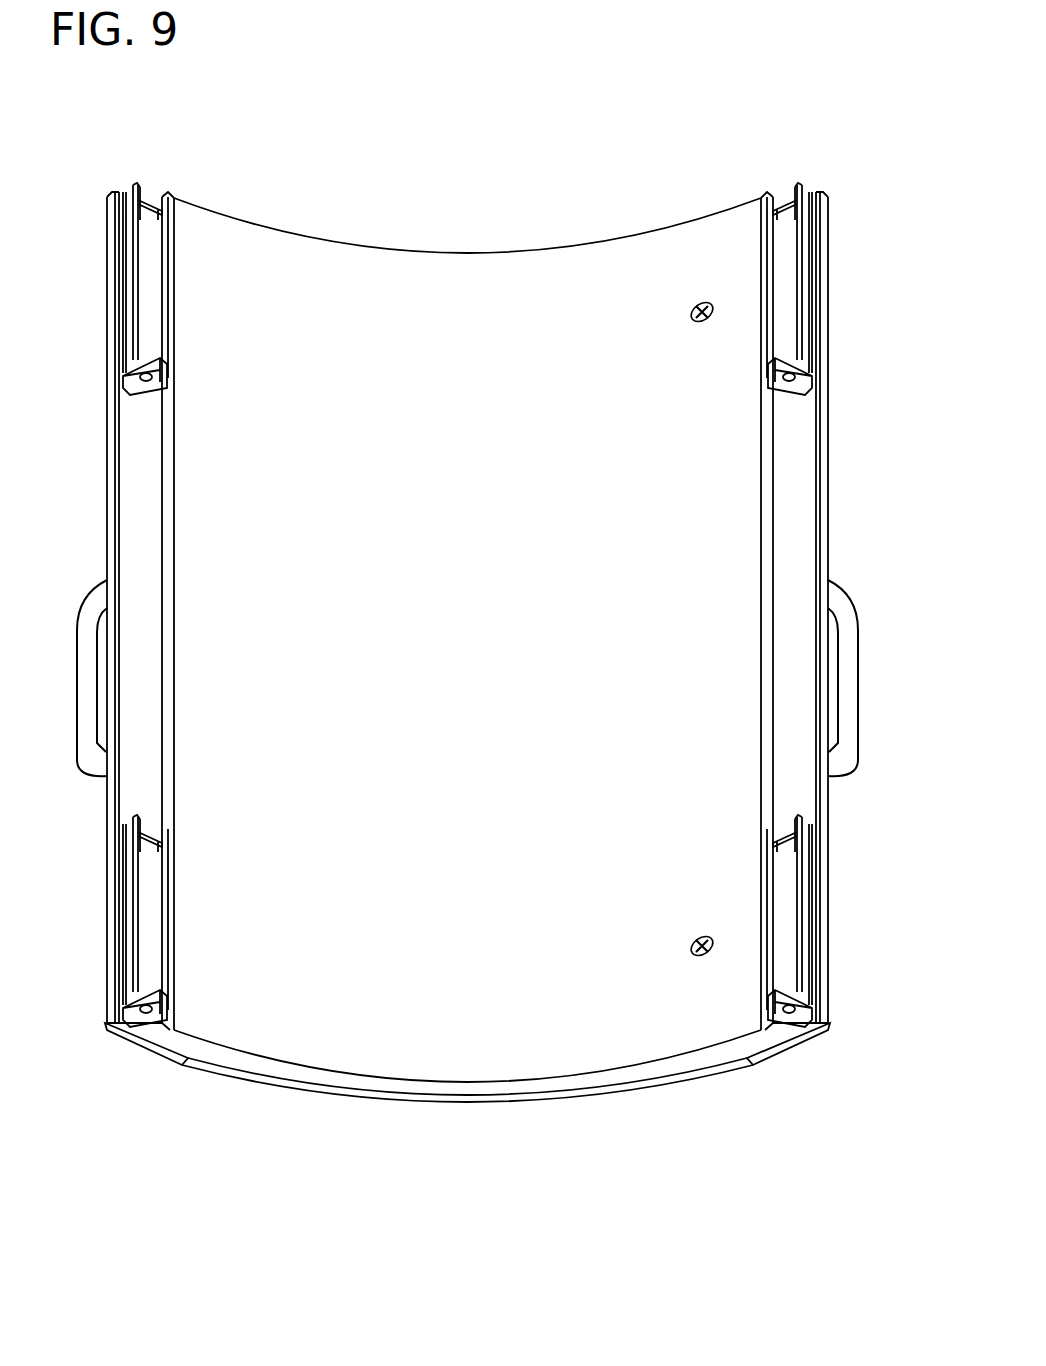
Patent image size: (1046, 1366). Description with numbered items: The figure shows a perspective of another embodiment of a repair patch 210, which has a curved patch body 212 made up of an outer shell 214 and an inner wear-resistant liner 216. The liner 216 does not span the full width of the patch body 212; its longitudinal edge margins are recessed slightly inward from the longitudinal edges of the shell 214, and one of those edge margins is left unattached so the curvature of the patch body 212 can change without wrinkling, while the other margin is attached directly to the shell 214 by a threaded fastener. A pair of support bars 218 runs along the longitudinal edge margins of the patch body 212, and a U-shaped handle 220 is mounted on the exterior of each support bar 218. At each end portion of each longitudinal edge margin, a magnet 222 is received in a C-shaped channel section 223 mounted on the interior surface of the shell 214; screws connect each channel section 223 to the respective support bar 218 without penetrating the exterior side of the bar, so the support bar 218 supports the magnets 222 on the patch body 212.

The patch 210 is at (100, 1218).
The patch body 212 is at (243, 1100).
The outer shell 214 is at (480, 1101).
The inner wear-resistant liner 216 is at (622, 1072).
The support bar 218 is at (140, 1042).
The U-shaped handle 220 is at (95, 762).
The magnet 222 is at (783, 290).
The channel section 223 is at (806, 346).